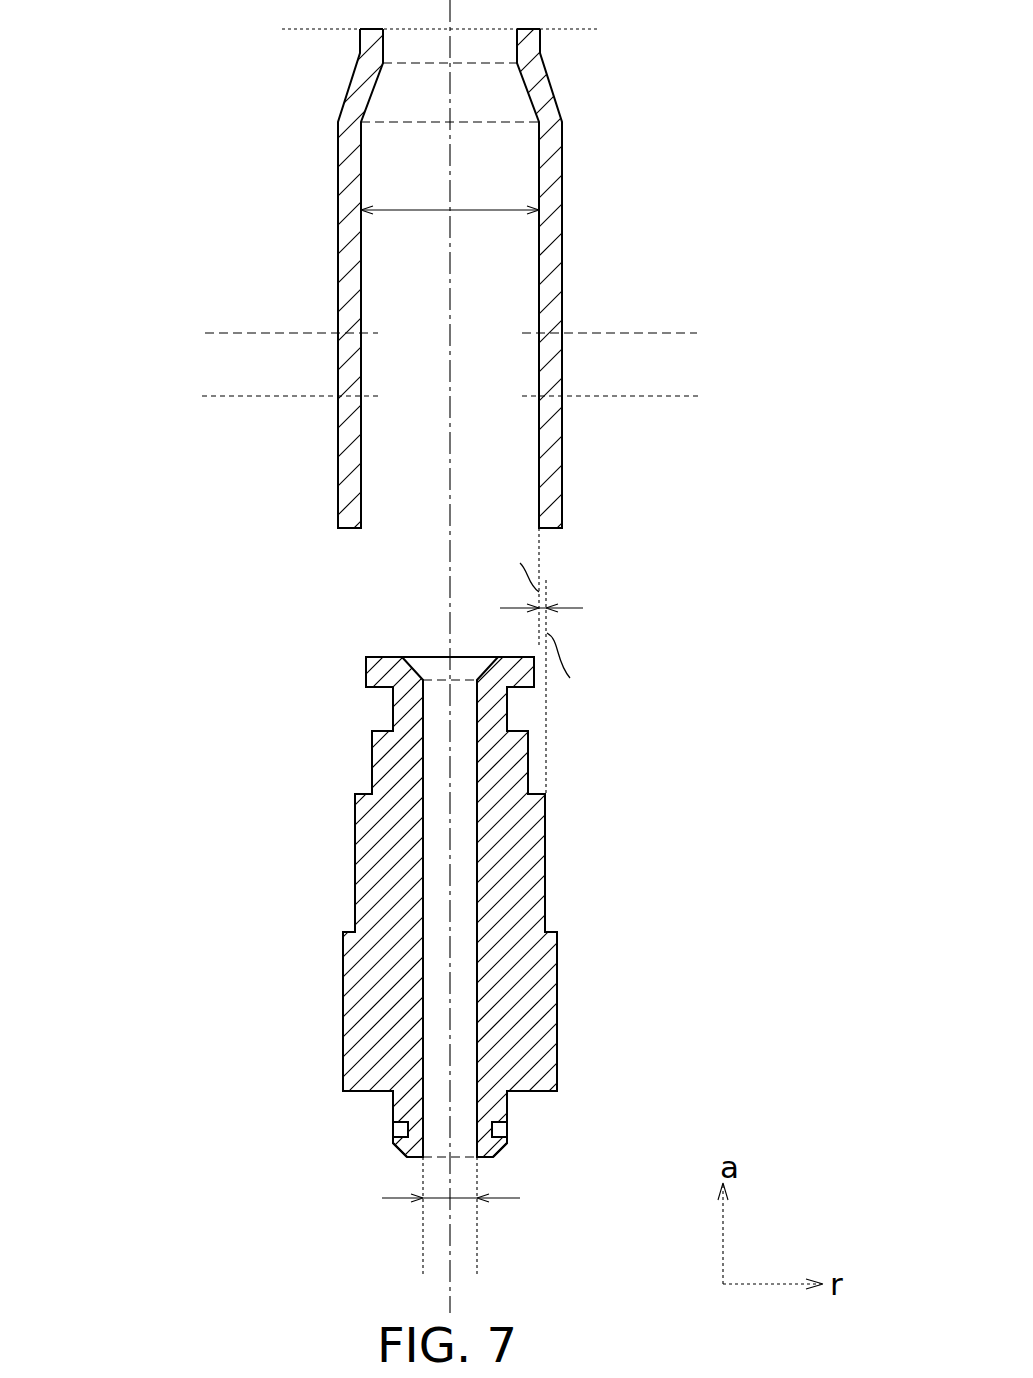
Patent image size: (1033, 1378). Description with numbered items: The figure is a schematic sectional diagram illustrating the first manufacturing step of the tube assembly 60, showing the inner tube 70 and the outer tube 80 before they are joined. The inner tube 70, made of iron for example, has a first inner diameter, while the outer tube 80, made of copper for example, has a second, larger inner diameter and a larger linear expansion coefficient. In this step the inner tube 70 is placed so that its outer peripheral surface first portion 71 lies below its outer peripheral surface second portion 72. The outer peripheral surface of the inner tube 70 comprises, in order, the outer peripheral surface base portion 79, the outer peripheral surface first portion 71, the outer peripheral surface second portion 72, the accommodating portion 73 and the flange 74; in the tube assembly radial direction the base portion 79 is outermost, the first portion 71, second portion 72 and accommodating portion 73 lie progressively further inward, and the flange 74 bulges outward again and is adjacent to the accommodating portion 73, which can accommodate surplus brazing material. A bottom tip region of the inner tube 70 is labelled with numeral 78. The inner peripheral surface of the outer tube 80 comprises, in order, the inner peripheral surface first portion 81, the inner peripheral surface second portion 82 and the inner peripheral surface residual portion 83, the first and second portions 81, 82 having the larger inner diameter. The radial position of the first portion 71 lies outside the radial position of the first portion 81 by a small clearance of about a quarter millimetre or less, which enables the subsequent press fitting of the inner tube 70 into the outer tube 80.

The tube assembly 60 is at (147, 70).
The inner tube 70 is at (516, 638).
The outer peripheral surface first portion 71 is at (355, 862).
The outer peripheral surface second portion 72 is at (372, 760).
The accommodating portion 73 is at (393, 712).
The flange 74 is at (366, 672).
The tip portion 78 is at (398, 1150).
The outer peripheral surface base portion 79 is at (343, 1011).
The outer tube 80 is at (516, 600).
The inner peripheral surface first portion 81 is at (358, 478).
The inner peripheral surface second portion 82 is at (360, 358).
The inner peripheral surface residual portion 83 is at (360, 276).